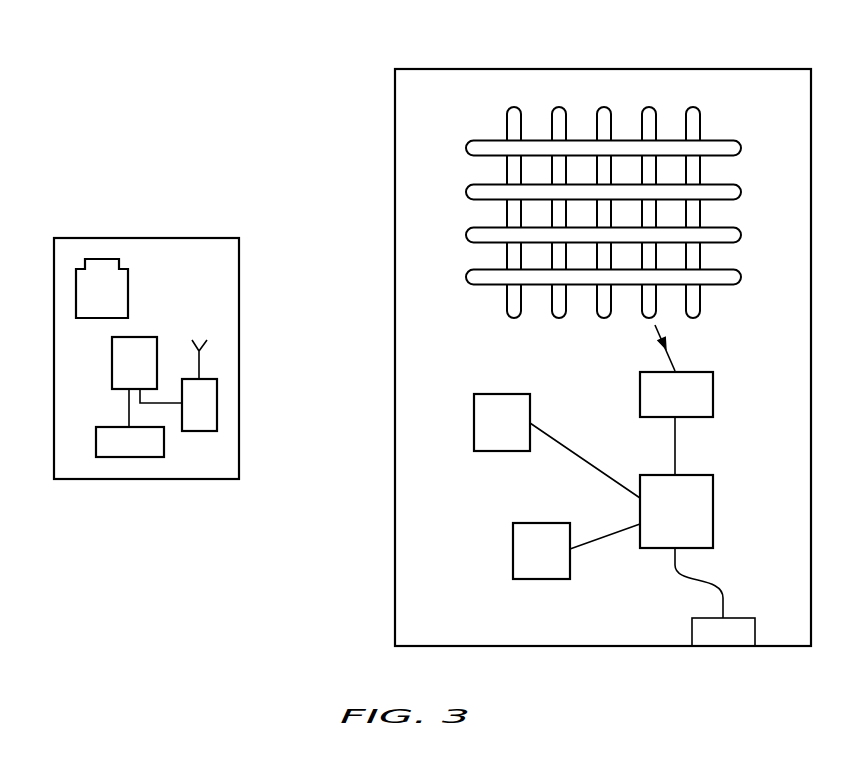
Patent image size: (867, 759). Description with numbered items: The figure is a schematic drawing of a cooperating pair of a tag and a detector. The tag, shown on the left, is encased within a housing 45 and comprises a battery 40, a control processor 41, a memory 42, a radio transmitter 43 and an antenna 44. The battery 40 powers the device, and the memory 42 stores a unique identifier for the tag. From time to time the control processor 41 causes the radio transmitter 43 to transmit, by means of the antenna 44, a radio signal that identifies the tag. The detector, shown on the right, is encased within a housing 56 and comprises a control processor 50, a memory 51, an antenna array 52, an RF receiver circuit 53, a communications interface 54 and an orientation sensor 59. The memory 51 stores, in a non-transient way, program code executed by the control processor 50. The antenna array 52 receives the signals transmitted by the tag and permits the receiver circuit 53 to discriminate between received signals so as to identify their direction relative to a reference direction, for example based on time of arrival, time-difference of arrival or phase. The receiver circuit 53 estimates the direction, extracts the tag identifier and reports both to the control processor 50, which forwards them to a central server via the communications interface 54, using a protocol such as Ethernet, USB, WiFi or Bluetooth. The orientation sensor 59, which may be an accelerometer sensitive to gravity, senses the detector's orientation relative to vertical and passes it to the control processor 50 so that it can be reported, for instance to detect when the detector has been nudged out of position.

The battery 40 is at (76, 280).
The control processor 41 is at (112, 349).
The memory 42 is at (96, 437).
The radio transmitter 43 is at (217, 397).
The antenna 44 is at (207, 342).
The housing 45 is at (213, 238).
The control processor 50 is at (713, 490).
The memory 51 is at (513, 538).
The antenna array 52 is at (479, 123).
The RF receiver circuit 53 is at (713, 387).
The communications interface 54 is at (724, 635).
The housing 56 is at (785, 68).
The orientation sensor 59 is at (474, 409).